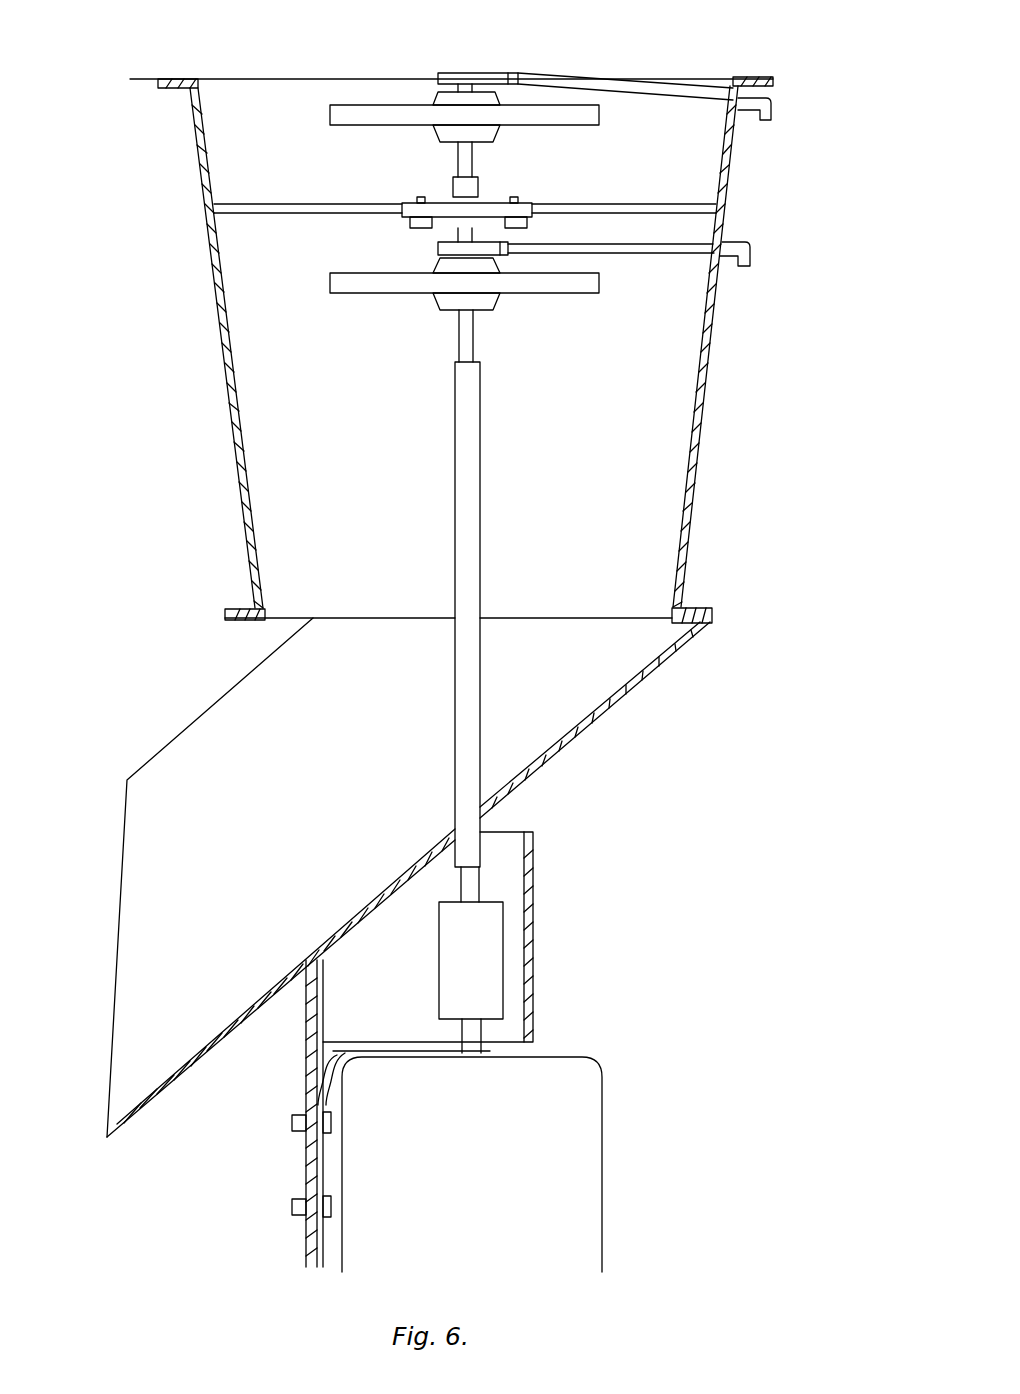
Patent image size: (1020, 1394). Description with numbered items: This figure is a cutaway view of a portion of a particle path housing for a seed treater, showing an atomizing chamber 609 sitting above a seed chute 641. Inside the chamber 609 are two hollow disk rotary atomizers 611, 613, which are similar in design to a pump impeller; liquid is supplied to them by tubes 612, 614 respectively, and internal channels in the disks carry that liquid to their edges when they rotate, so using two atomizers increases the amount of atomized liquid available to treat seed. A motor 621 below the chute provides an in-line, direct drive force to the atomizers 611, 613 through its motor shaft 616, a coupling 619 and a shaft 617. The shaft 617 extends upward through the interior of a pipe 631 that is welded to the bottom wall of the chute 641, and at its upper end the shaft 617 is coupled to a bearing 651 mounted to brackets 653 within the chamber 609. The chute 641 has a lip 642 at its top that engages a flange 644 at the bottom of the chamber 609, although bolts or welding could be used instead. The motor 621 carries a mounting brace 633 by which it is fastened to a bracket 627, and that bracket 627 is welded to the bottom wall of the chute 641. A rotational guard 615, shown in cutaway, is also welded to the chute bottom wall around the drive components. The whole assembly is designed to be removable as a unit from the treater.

The atomizing chamber 609 is at (699, 467).
The hollow disk rotary atomizer 611 is at (356, 116).
The tube 612 is at (660, 88).
The hollow disk rotary atomizer 613 is at (590, 286).
The tube 614 is at (686, 249).
The rotational guard 615 is at (534, 977).
The motor shaft 616 is at (473, 1035).
The shaft 617 is at (467, 340).
The coupling 619 is at (490, 917).
The motor 621 is at (592, 1142).
The bracket 627 is at (253, 1015).
The pipe 631 is at (480, 537).
The mounting brace 633 is at (348, 1052).
The seed chute 641 is at (615, 709).
The lip 642 is at (712, 618).
The flange 644 is at (228, 620).
The bearing 651 is at (484, 203).
The brackets 653 is at (316, 219).